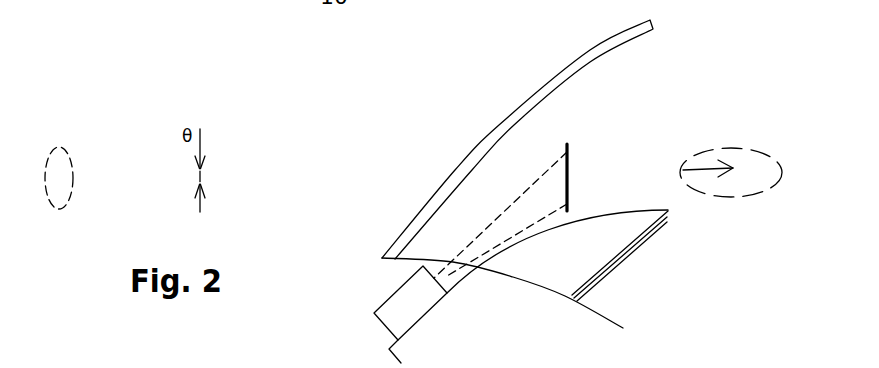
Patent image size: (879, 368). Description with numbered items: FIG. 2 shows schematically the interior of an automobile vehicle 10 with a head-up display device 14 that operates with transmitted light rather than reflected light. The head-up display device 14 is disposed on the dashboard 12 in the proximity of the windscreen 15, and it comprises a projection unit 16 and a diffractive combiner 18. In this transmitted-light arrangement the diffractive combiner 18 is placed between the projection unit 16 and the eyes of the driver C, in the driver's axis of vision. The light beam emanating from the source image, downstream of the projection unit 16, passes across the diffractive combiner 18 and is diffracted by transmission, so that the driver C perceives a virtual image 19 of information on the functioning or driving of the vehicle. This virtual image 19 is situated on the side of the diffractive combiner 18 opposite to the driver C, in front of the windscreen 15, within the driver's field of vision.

The automobile vehicle 10 is at (700, 62).
The dashboard 12 is at (647, 249).
The head-up display device 14 is at (636, 152).
The windscreen 15 is at (507, 118).
The projection unit 16 is at (384, 288).
The diffractive combiner 18 is at (580, 152).
The virtual image 19 is at (62, 140).
The driver C is at (765, 141).